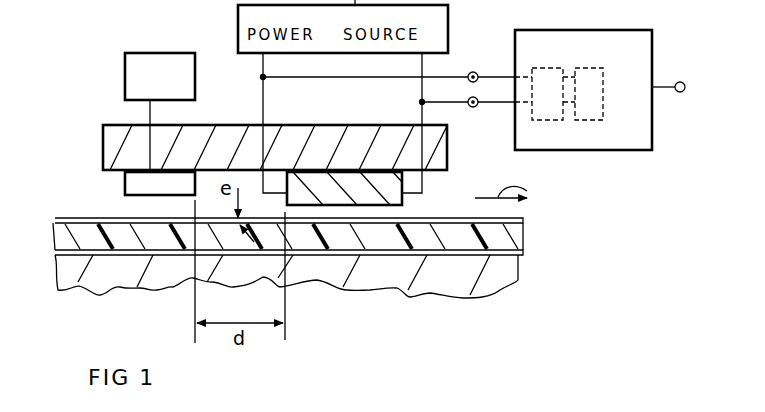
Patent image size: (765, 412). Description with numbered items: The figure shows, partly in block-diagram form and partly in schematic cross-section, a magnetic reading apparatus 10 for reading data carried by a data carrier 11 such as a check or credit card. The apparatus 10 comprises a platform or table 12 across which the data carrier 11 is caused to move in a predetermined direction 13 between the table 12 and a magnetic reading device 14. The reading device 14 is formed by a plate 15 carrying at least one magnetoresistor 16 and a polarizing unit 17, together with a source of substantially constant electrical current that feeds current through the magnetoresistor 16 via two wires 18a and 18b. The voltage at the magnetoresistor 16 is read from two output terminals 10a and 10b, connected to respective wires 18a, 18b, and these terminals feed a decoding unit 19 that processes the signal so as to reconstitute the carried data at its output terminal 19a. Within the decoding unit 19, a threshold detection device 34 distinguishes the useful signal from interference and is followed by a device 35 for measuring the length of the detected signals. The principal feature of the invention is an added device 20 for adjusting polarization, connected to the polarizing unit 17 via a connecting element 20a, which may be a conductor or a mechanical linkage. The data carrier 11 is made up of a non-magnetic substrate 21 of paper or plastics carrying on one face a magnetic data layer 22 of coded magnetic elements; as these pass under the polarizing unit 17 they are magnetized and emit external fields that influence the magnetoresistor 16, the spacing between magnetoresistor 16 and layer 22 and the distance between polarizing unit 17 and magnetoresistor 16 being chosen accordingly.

The apparatus 10 is at (92, 97).
The output terminal 10a is at (473, 72).
The output terminal 10b is at (473, 107).
The data carrier 11 is at (530, 237).
The table 12 is at (448, 285).
The predetermined direction 13 is at (513, 197).
The magnetic reading device 14 is at (97, 139).
The plate 15 is at (197, 126).
The magnetoresistor 16 is at (402, 200).
The polarizing unit 17 is at (125, 182).
The wire 18a is at (275, 100).
The wire 18b is at (422, 90).
The decoding unit 19 is at (610, 151).
The output terminal 19a is at (680, 92).
The device for adjusting polarization 20 is at (157, 53).
The connecting element 20a is at (149, 118).
The non-magnetic substrate 21 is at (524, 251).
The magnetic data layer 22 is at (523, 218).
The threshold detection device 34 is at (542, 68).
The device for measuring the length of the detected signals 35 is at (593, 68).